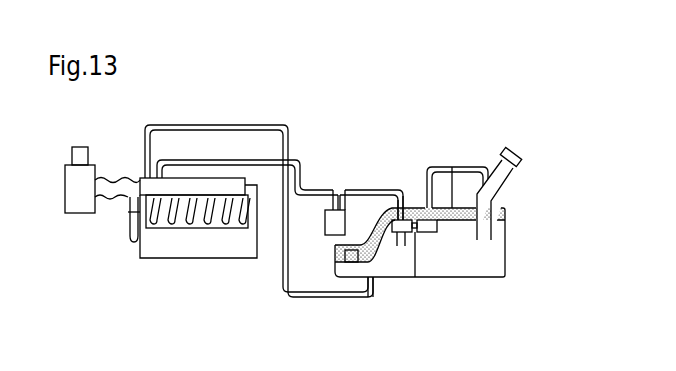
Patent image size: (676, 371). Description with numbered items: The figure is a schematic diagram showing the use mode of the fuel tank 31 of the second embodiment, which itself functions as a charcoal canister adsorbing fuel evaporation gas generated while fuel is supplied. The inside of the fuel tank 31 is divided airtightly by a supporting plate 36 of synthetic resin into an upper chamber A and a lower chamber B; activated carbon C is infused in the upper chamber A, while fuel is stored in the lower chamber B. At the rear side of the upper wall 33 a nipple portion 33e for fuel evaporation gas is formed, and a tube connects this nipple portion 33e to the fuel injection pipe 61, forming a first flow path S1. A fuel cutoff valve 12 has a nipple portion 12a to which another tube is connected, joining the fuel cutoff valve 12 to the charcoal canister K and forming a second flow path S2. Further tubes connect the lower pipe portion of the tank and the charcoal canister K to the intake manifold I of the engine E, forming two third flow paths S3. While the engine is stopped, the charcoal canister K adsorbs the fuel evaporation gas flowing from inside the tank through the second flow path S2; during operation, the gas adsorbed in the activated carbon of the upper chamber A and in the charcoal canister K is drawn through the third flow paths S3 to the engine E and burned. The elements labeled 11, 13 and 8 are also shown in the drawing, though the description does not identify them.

The engine E is at (157, 245).
The intake manifold I is at (128, 182).
The third flow path S3 is at (303, 190).
The second flow path S2 is at (360, 190).
The first flow path S1 is at (452, 167).
The nipple portion 12a is at (407, 202).
The charcoal canister K is at (325, 216).
The fuel tank 31 is at (509, 284).
The pump 11 is at (347, 262).
The fuel cutoff valve 12 is at (398, 246).
The valve 13 is at (428, 232).
The supporting plate 36 is at (370, 283).
The conduit 8 is at (420, 331).
The nipple portion 33e is at (414, 205).
The fuel injection pipe 61 is at (508, 182).
The upper wall 33 is at (490, 202).
The upper chamber A is at (502, 215).
The lower chamber B is at (492, 255).
The activated carbon C is at (458, 224).